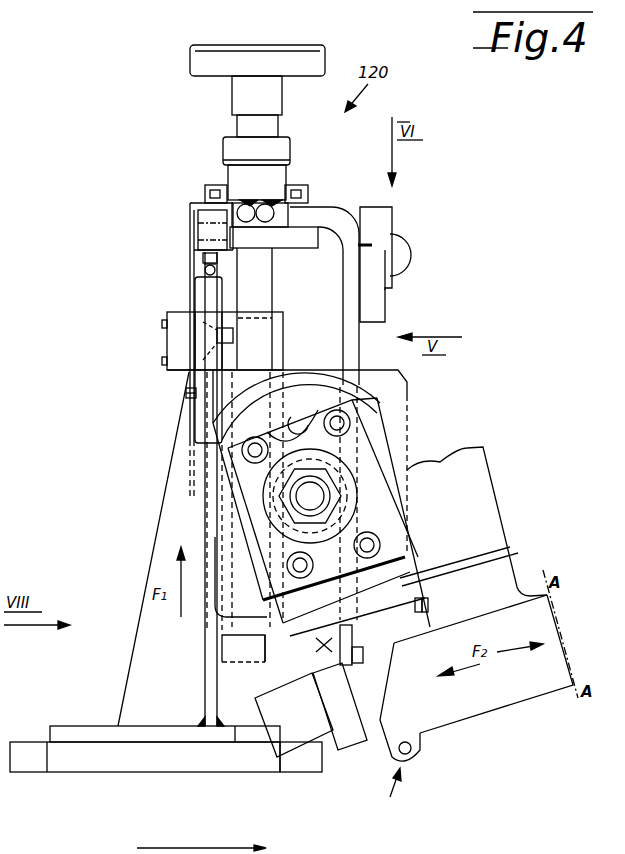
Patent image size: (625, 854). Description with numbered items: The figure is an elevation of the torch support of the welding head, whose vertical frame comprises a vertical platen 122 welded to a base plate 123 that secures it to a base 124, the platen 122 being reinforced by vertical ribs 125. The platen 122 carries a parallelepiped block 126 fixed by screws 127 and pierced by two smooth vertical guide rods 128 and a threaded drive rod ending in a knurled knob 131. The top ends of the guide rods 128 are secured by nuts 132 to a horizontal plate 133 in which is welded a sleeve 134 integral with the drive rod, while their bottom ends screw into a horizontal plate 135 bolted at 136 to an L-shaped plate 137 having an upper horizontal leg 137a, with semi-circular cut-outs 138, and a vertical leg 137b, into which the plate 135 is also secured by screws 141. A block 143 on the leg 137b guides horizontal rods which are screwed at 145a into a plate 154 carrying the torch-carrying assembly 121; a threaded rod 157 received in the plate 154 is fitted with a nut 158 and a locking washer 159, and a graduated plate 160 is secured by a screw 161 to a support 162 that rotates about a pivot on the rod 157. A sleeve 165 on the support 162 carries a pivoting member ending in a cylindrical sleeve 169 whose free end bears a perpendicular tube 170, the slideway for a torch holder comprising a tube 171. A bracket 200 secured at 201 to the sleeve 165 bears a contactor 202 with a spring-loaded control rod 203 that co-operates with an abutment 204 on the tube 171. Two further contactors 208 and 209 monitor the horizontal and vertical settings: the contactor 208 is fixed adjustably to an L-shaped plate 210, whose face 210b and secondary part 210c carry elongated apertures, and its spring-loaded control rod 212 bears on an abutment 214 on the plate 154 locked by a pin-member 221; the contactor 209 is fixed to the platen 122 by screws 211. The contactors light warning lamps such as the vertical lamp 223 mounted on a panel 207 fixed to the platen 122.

The torch-carrying assembly 121 is at (405, 793).
The vertical platen 122 is at (209, 698).
The base plate 123 is at (107, 737).
The base 124 is at (322, 772).
The vertical ribs 125 is at (140, 650).
The parallelepiped block 126 is at (252, 343).
The screws 127 is at (283, 315).
The smooth vertical guide rods 128 is at (256, 276).
The knurled knob 131 is at (218, 63).
The nuts 132 is at (262, 200).
The horizontal plate 133 is at (401, 263).
The sleeve 134 is at (253, 178).
The horizontal plate 135 is at (272, 658).
The bolts 136 is at (208, 186).
The plate of L-shape cross-section 137 is at (372, 245).
The upper horizontal leg 137a is at (318, 217).
The vertical leg 137b is at (363, 640).
The semi-circular cut-outs 138 is at (292, 209).
The screws 141 is at (358, 655).
The block 143 is at (281, 601).
The screwed ends of horizontal rods 145a is at (313, 413).
The plate 154 is at (392, 379).
The threaded rod 157 is at (305, 497).
The nut 158 is at (290, 514).
The locking washer 159 is at (350, 510).
The graduated plate 160 is at (373, 413).
The screw 161 is at (250, 452).
The support 162 is at (363, 436).
The sleeve 165 is at (468, 462).
The cylindrical sleeve 169 is at (488, 563).
The tube 170 is at (507, 685).
The tube 171 is at (294, 715).
The bracket 200 is at (416, 598).
The securing point 201 is at (430, 605).
The contactor 202 is at (493, 571).
The spring-loaded control rod 203 is at (328, 639).
The abutment 204 is at (338, 713).
The panel 207 is at (378, 293).
The contactor 208 is at (208, 245).
The contactor 209 is at (182, 365).
The plate of L-shaped cross-section 210 is at (192, 211).
The face of plate 210 210b is at (203, 203).
The secondary part of vertical flange 210c is at (190, 236).
The screws 211 is at (167, 324).
The spring-loaded control rod 212 is at (202, 265).
The abutment 214 is at (205, 290).
The pin-member 221 is at (186, 396).
The warning light 223 is at (383, 268).